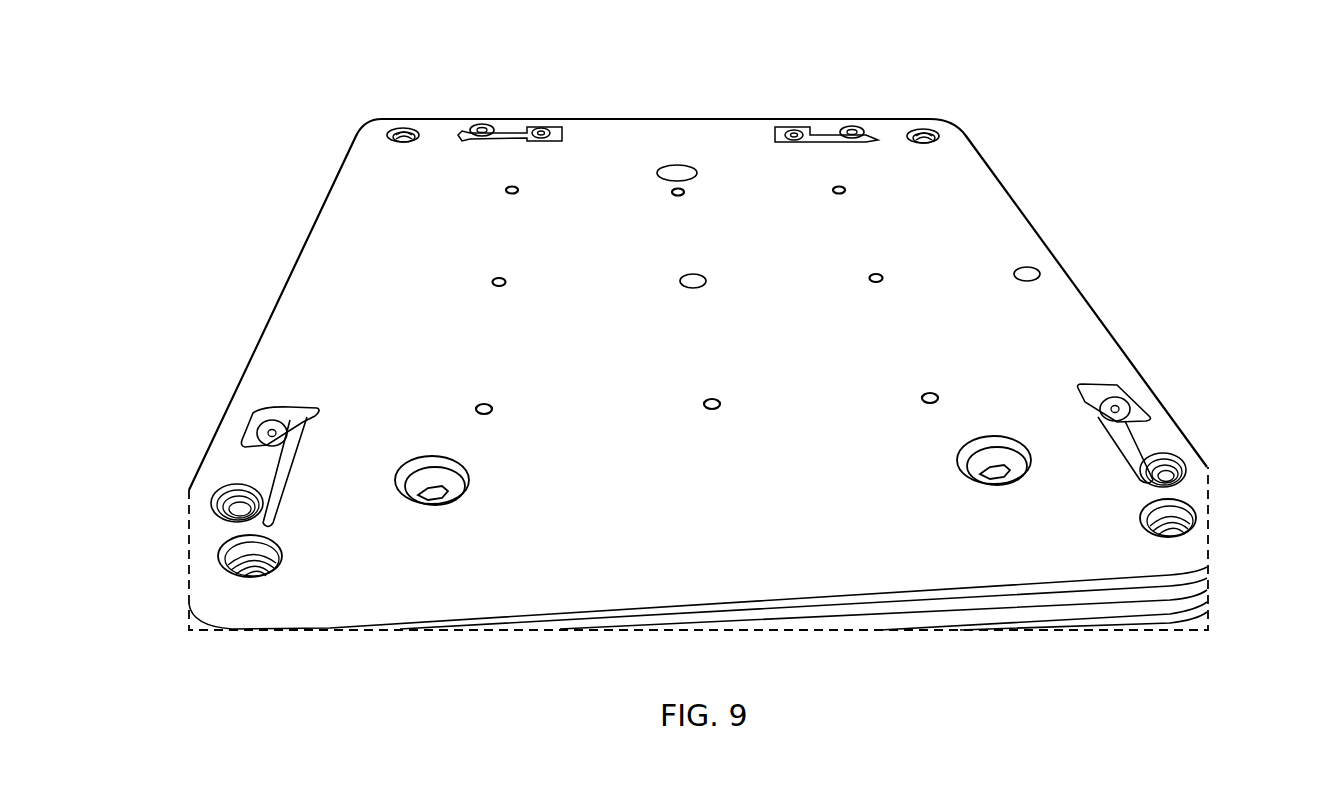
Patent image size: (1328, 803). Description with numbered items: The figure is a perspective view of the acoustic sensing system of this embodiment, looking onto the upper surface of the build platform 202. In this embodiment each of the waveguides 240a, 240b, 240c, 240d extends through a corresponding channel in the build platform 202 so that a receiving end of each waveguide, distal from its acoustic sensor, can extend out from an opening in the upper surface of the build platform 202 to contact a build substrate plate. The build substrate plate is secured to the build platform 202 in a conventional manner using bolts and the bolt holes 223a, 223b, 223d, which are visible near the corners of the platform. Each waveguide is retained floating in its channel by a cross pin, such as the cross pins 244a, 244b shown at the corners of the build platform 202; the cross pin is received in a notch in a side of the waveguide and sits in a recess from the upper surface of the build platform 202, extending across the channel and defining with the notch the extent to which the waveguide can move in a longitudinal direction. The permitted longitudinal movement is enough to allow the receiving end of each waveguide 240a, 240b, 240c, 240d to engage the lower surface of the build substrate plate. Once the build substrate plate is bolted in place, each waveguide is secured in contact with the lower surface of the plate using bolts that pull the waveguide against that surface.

The build platform 202 is at (886, 563).
The bolt hole 223a is at (237, 560).
The bolt hole 223b is at (1168, 535).
The bolt hole 223d is at (402, 130).
The waveguide 240a is at (230, 507).
The waveguide 240b is at (1183, 470).
The waveguide 240c is at (482, 126).
The waveguide 240d is at (793, 130).
The cross pin 244a is at (270, 476).
The cross pin 244b is at (1122, 447).